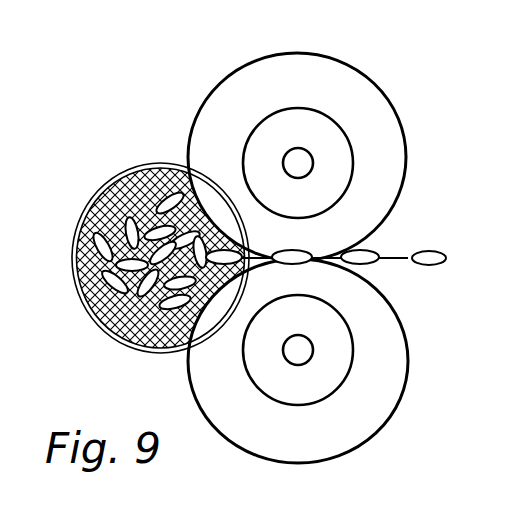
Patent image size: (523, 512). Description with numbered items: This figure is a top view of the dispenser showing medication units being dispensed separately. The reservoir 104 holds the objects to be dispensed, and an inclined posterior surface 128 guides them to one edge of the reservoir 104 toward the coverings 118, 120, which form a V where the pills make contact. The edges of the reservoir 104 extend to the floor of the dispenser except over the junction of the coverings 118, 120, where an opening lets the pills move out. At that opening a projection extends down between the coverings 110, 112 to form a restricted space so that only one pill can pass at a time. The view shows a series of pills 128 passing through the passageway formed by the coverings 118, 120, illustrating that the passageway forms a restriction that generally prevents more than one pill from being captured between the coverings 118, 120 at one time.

The reservoir 104 is at (87, 317).
The inclined posterior surface 128 is at (93, 200).
The covering 118 is at (403, 128).
The covering 120 is at (253, 455).
The covering 110 is at (258, 118).
The covering 112 is at (352, 377).